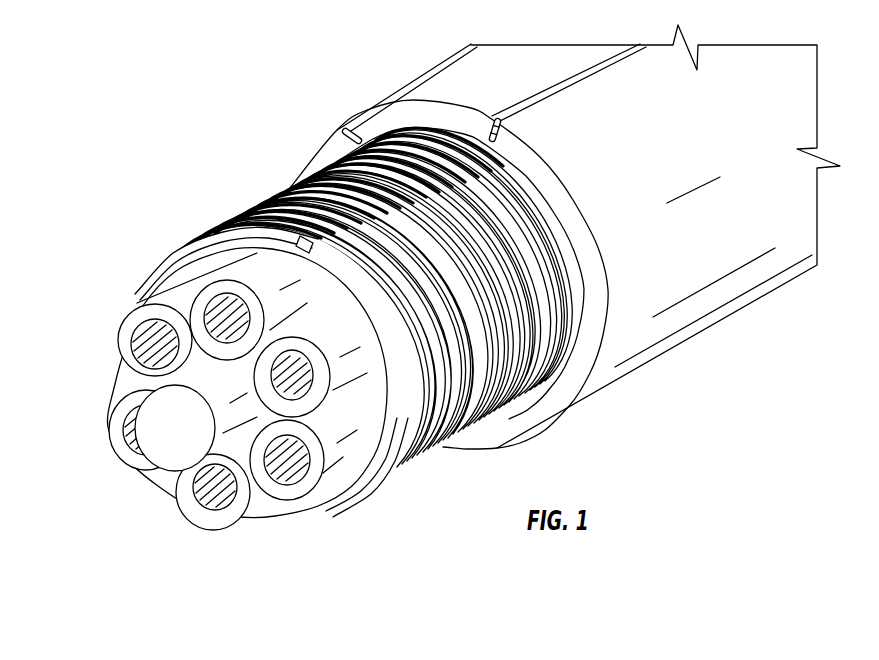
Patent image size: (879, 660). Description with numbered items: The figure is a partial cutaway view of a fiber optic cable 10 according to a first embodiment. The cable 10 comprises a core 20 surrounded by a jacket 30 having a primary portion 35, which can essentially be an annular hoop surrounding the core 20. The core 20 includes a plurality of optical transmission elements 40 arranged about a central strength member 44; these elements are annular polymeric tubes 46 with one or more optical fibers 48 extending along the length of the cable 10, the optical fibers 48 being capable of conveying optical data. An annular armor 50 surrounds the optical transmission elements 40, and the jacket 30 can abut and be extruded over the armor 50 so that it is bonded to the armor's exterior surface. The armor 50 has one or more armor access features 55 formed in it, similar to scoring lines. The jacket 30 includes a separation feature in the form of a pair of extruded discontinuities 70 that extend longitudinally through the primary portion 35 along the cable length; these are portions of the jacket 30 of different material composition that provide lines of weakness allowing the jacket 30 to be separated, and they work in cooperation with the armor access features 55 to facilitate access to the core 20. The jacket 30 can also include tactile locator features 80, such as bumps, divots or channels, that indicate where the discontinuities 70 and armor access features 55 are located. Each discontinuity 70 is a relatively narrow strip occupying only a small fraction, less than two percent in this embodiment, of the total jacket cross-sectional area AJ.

The fiber optic cable 10 is at (122, 157).
The core 20 is at (238, 415).
The jacket 30 is at (565, 237).
The primary portion 35 is at (416, 107).
The optical transmission elements 40 is at (188, 431).
The central strength member 44 is at (150, 437).
The annular polymeric tubes 46 is at (338, 452).
The optical fibers 48 is at (294, 471).
The annular armor 50 is at (250, 232).
The armor access features 55 is at (173, 250).
The extruded discontinuities 70 is at (358, 129).
The tactile locator features 80 is at (333, 117).
The total jacket cross-sectional area AJ is at (502, 426).